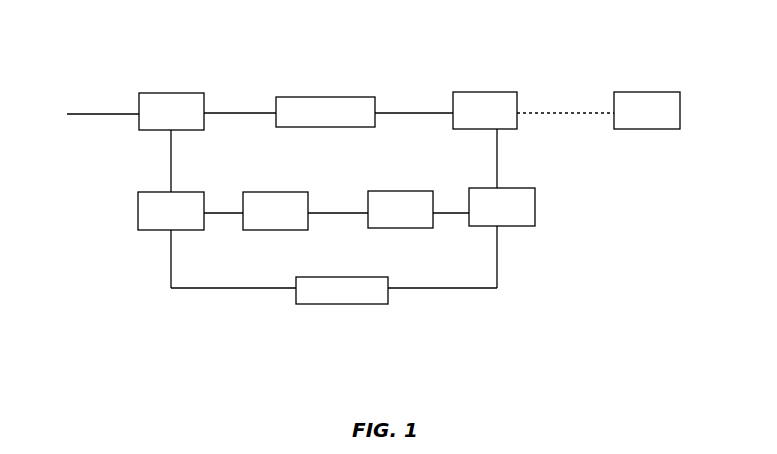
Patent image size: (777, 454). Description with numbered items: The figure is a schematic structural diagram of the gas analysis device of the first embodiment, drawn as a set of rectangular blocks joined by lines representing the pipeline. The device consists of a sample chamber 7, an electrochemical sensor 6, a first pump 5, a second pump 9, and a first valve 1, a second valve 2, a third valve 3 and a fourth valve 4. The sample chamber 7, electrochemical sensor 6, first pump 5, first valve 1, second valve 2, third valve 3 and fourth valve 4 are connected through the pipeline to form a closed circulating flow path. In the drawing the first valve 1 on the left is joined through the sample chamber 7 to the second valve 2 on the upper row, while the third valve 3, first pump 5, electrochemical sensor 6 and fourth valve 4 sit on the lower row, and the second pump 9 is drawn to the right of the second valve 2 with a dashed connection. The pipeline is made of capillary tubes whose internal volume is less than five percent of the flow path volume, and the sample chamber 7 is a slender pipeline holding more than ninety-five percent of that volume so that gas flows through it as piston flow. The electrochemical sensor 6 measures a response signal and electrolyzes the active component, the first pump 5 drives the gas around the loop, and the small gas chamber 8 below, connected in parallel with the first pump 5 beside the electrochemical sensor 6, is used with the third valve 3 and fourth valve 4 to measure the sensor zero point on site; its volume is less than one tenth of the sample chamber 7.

The first valve 1 is at (178, 81).
The second valve 2 is at (490, 79).
The third valve 3 is at (180, 181).
The fourth valve 4 is at (508, 178).
The first pump 5 is at (283, 181).
The electrochemical sensor 6 is at (403, 179).
The sample chamber 7 is at (326, 79).
The small gas chamber 8 is at (346, 316).
The second pump 9 is at (650, 79).